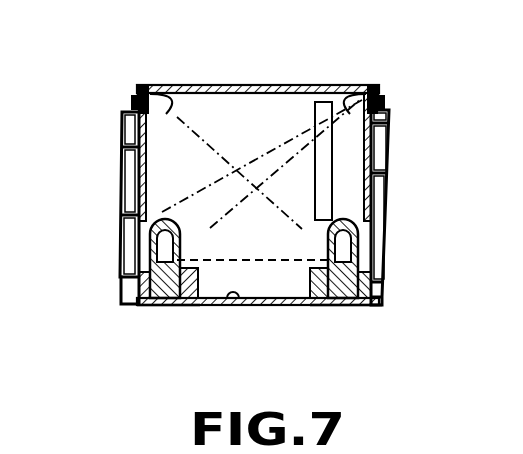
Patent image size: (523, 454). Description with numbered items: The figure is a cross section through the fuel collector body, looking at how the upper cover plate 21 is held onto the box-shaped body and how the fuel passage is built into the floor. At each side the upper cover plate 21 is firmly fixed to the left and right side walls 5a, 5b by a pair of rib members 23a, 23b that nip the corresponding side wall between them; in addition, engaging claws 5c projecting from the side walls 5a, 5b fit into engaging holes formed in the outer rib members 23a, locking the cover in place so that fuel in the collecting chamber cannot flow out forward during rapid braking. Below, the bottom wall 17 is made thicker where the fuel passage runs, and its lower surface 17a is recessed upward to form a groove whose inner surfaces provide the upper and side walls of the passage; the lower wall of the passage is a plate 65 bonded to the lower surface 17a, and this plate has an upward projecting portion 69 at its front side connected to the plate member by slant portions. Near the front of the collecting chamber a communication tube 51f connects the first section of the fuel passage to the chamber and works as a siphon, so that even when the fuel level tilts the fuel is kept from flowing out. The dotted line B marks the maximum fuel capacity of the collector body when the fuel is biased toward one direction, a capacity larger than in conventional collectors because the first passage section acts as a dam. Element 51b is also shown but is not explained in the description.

The upper cover plate 21 is at (259, 86).
The bottom wall 17 is at (227, 299).
The lower surface 17a is at (255, 299).
The left side wall 5a is at (125, 149).
The right side wall 5b is at (389, 161).
The engaging claw 5c is at (140, 92).
The outer rib member 23a is at (135, 101).
The inner rib member 23b is at (178, 98).
The communication tube 51f is at (325, 143).
The sealing gasket 51b is at (162, 240).
The upward projecting portion 69 is at (146, 286).
The plate 65 is at (163, 309).
The dotted line B is at (264, 178).